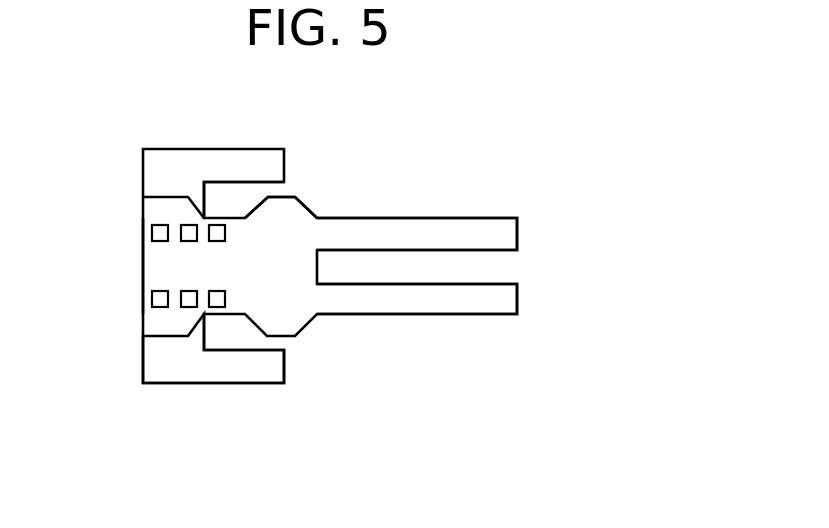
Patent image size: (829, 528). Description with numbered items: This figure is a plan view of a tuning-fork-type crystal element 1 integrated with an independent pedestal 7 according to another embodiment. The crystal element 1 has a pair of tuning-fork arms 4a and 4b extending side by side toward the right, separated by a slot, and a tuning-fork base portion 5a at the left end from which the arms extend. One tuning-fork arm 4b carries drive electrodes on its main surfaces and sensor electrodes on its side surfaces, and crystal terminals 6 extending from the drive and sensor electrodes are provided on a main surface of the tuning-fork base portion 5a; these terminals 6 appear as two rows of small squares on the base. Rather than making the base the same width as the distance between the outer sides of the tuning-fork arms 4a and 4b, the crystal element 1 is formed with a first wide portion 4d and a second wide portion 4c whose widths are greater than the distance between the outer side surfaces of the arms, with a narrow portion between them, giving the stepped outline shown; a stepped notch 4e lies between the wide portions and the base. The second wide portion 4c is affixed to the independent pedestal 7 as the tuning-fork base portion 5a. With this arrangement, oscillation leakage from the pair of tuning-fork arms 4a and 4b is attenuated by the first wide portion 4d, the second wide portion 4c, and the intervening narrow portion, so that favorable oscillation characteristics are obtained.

The tuning-fork-type crystal element 1 is at (315, 255).
The tuning-fork arm 4a is at (500, 297).
The tuning-fork arm 4b is at (500, 233).
The second wide portion 4c is at (167, 210).
The first wide portion 4d is at (285, 210).
The stepped notch 4e is at (227, 212).
The tuning-fork base portion 5a is at (170, 265).
The crystal terminals 6 is at (155, 232).
The independent pedestal 7 is at (166, 353).